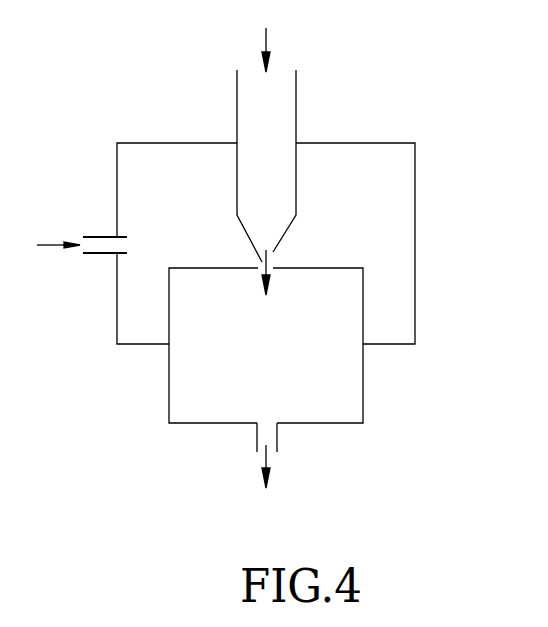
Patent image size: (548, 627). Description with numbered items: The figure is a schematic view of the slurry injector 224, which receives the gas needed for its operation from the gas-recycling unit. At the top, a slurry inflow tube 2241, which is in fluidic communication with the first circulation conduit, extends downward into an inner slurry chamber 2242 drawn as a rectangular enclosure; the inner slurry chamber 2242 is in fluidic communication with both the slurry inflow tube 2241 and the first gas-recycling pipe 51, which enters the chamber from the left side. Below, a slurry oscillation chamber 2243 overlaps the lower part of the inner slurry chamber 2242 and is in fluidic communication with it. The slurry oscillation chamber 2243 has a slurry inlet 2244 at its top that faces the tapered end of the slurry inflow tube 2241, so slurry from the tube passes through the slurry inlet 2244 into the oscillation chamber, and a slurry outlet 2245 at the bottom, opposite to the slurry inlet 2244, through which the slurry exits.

The slurry injector 224 is at (422, 120).
The slurry inflow tube 2241 is at (237, 108).
The inner slurry chamber 2242 is at (415, 280).
The slurry oscillation chamber 2243 is at (363, 390).
The slurry inlet 2244 is at (270, 268).
The slurry outlet 2245 is at (272, 445).
The first gas-recycling pipe 51 is at (108, 237).